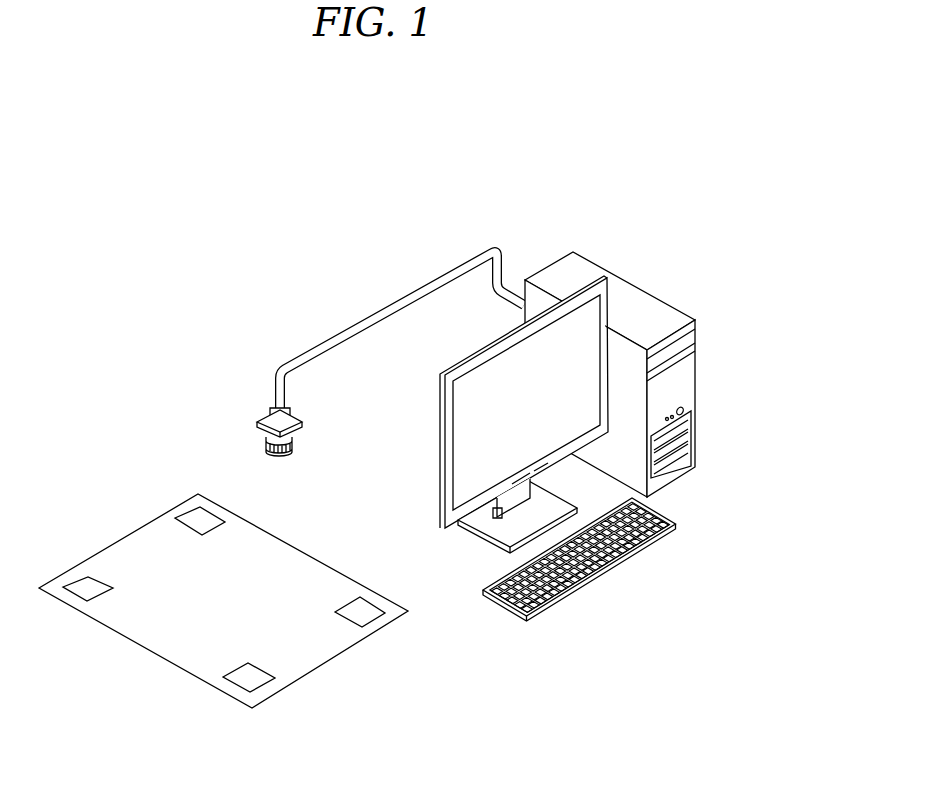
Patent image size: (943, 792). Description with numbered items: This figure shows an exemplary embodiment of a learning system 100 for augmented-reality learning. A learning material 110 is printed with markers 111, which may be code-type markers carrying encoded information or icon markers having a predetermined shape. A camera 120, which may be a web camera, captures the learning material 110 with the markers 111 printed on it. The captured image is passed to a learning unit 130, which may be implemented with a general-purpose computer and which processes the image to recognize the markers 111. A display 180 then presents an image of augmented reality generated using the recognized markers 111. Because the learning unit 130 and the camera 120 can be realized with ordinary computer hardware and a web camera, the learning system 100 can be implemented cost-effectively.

The learning system 100 is at (362, 183).
The learning material 110 is at (168, 662).
The markers 111 is at (97, 582).
The camera 120 is at (267, 440).
The learning unit 130 is at (638, 275).
The display 180 is at (440, 463).